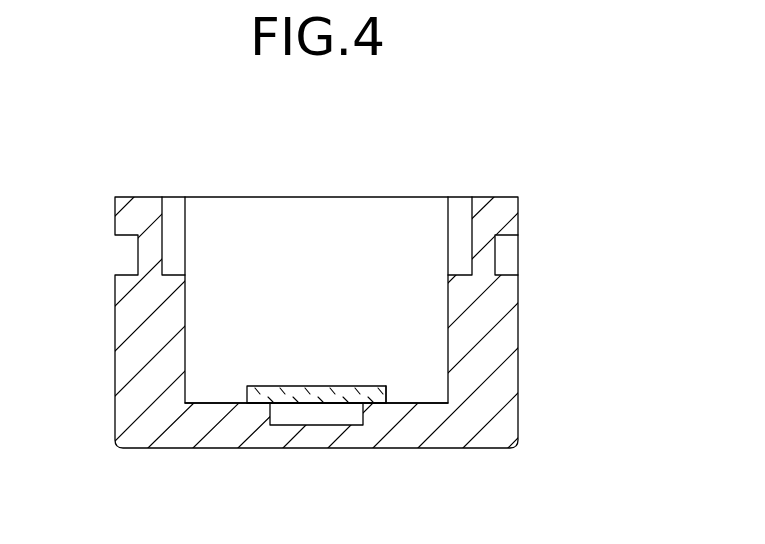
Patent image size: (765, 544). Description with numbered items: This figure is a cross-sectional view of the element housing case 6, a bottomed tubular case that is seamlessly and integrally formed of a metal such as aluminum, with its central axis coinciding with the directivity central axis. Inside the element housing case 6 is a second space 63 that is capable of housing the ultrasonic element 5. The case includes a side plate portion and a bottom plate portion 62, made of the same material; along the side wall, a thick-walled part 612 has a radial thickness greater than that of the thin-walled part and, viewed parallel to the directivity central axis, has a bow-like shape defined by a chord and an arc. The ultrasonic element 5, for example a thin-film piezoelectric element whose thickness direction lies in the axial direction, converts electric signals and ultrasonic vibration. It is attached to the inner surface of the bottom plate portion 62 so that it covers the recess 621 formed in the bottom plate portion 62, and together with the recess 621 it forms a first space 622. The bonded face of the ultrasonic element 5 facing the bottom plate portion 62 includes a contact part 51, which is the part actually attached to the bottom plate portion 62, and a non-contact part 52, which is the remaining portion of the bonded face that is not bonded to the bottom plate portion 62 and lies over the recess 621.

The element housing case 6 is at (535, 178).
The second space 63 is at (328, 215).
The thick-walled part 612 is at (505, 334).
The bottom plate portion 62 is at (225, 435).
The recess 621 is at (363, 415).
The first space 622 is at (271, 398).
The ultrasonic element 5 is at (316, 400).
The contact part 51 is at (383, 403).
The non-contact part 52 is at (318, 410).